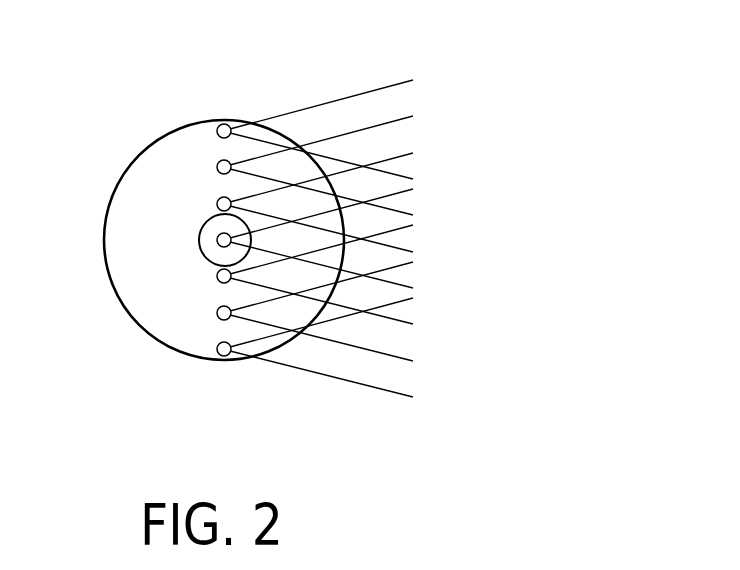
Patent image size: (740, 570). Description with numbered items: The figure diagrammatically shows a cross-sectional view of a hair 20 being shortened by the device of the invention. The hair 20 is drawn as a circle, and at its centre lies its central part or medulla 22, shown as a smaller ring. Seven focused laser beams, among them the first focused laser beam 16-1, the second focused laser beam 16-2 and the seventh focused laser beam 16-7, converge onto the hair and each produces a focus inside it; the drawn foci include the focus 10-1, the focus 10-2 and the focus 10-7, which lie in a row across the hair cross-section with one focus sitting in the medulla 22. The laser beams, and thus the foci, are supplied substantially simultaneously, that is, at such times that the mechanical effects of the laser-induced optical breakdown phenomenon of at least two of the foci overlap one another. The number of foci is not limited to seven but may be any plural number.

The focus 10-1 is at (226, 124).
The focus 10-2 is at (217, 167).
The focus 10-7 is at (210, 354).
The focused laser beam 16-1 is at (332, 118).
The focused laser beam 16-2 is at (293, 163).
The focused laser beam 16-7 is at (266, 345).
The hair 20 is at (132, 210).
The medulla 22 is at (217, 238).